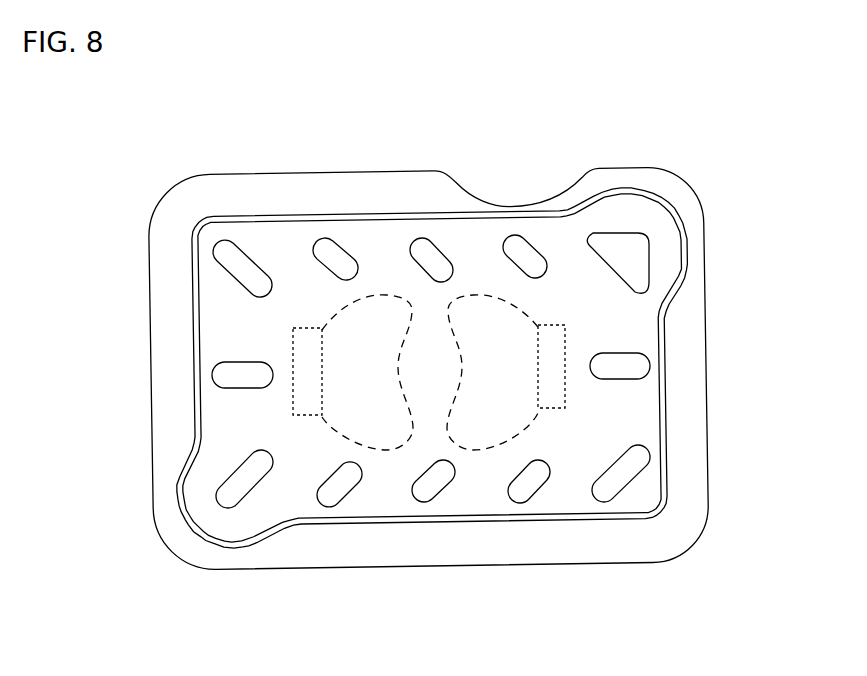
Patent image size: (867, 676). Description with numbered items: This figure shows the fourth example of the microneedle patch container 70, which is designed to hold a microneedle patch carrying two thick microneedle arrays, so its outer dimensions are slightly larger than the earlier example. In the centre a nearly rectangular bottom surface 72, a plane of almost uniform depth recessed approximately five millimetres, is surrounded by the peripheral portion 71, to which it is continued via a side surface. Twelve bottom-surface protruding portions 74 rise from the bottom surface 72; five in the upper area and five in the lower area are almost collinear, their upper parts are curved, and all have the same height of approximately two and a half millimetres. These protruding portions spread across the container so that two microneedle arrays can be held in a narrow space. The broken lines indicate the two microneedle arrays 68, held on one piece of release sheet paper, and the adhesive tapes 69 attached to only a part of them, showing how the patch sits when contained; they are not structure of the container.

The microneedle patch container 70 is at (152, 193).
The peripheral portion 71 is at (387, 185).
The bottom surface 72 is at (642, 327).
The bottom-surface protruding portions 74 is at (237, 243).
The adhesive tapes 69 is at (305, 417).
The microneedle arrays 68 is at (387, 450).